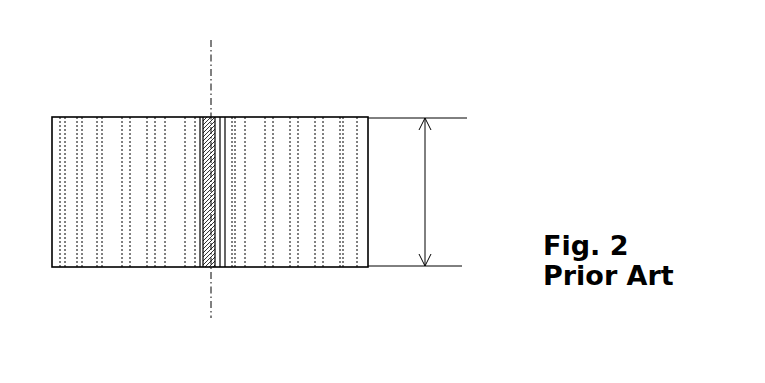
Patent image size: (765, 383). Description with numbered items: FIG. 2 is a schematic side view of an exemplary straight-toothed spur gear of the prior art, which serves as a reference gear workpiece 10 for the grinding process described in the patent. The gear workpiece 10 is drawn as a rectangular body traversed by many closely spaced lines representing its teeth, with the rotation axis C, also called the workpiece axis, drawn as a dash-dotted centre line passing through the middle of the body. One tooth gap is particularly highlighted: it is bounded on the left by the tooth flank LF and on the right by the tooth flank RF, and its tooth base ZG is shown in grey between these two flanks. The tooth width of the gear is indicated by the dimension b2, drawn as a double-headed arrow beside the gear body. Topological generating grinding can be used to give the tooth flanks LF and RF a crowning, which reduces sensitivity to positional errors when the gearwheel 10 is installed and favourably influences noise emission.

The workpiece 10 is at (75, 60).
The rotation axis C is at (213, 166).
The tooth flank LF is at (200, 118).
The tooth flank RF is at (220, 118).
The tooth base ZG is at (213, 268).
The tooth width b2 is at (417, 192).